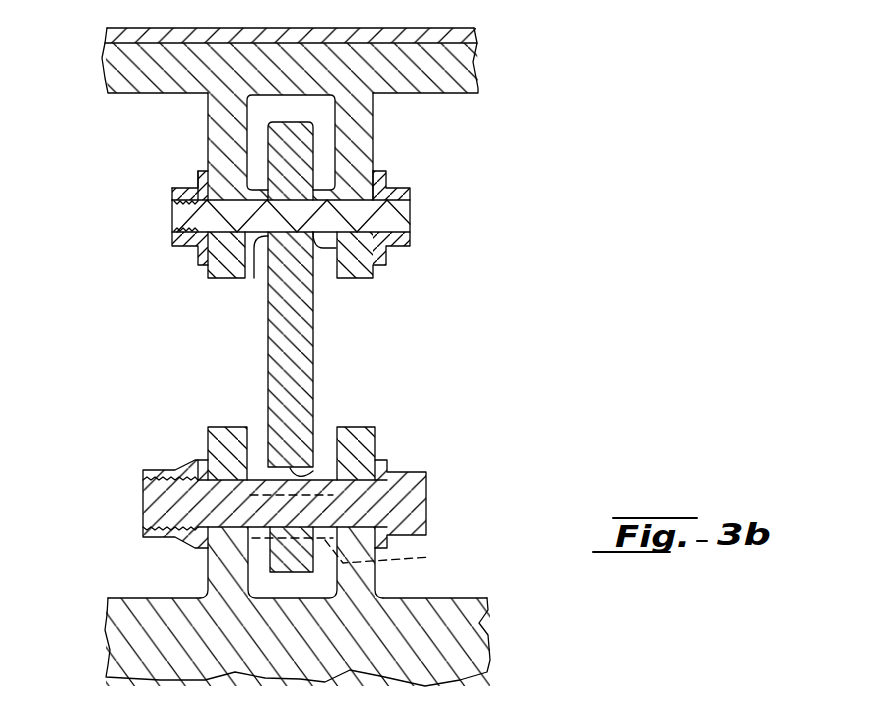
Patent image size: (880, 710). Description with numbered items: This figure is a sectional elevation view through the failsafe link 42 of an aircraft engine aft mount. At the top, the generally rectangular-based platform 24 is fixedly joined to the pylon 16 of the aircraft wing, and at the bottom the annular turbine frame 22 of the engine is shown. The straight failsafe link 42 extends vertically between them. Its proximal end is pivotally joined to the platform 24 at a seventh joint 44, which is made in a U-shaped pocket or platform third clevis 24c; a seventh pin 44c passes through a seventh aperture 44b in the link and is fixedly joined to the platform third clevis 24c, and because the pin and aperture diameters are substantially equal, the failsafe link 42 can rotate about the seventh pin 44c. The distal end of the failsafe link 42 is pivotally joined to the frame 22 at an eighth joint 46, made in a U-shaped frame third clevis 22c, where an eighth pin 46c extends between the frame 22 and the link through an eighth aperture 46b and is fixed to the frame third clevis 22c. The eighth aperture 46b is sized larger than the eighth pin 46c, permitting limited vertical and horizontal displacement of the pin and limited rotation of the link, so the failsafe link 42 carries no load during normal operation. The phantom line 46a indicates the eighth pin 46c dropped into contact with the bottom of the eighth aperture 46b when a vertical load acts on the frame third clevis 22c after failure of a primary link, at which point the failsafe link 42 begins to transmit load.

The pylon 16 is at (476, 31).
The platform 24 is at (480, 79).
The platform third clevis 24c is at (375, 134).
The failsafe link 42 is at (313, 352).
The seventh joint 44 is at (197, 268).
The seventh aperture 44b is at (256, 244).
The seventh pin 44c is at (172, 212).
The eighth joint 46 is at (165, 454).
The eighth pin in phantom line 46a is at (367, 534).
The eighth aperture 46b is at (314, 474).
The eighth pin 46c is at (143, 495).
The turbine frame 22 is at (483, 624).
The frame third clevis 22c is at (208, 566).